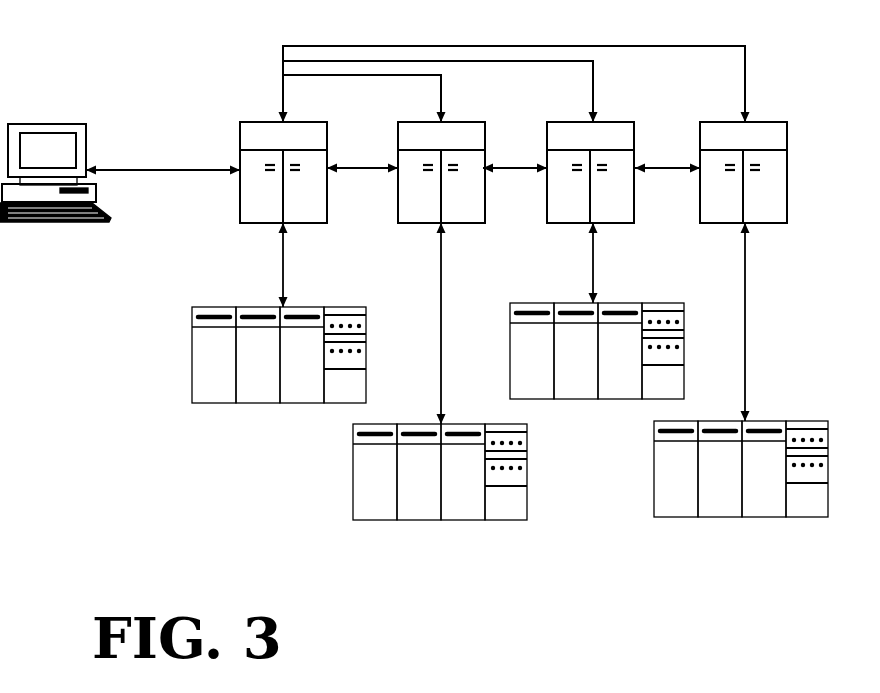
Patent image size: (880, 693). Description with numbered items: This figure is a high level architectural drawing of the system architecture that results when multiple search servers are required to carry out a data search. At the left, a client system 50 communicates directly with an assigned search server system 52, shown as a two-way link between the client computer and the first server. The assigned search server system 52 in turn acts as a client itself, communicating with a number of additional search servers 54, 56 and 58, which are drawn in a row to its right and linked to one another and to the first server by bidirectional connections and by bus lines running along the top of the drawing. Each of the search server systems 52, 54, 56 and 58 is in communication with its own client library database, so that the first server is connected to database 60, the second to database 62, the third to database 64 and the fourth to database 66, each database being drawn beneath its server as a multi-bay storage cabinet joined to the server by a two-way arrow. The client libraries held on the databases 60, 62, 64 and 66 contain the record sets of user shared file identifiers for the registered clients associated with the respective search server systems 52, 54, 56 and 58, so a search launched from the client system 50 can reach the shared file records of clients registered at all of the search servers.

The client system 50 is at (60, 147).
The assigned search server system 52 is at (238, 190).
The additional search server 54 is at (409, 192).
The additional search server 56 is at (559, 192).
The additional search server 58 is at (711, 192).
The client library database 60 is at (251, 392).
The client library database 62 is at (440, 505).
The client library database 64 is at (597, 386).
The client library database 66 is at (715, 505).